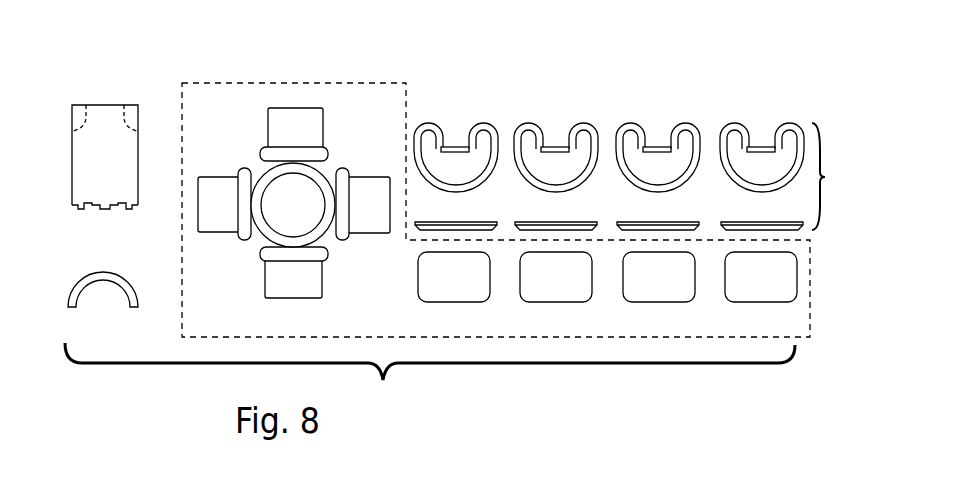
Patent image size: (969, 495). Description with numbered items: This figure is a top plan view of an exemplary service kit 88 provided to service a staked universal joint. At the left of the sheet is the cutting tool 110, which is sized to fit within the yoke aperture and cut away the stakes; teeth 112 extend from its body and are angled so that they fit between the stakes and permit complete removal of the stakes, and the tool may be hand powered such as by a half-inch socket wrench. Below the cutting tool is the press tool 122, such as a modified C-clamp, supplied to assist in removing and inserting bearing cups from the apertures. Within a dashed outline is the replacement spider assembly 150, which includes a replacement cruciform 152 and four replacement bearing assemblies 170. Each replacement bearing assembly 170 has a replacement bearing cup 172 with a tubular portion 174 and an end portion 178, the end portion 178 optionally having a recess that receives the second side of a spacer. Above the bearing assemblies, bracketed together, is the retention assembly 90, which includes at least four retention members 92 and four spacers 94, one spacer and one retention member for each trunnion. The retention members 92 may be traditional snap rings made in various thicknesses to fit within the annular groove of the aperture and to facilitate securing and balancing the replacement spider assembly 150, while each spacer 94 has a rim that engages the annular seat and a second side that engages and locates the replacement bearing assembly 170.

The service kit 88 is at (430, 374).
The retention assembly 90 is at (831, 176).
The retention member 92 is at (489, 129).
The spacer 94 is at (580, 222).
The cutting tool 110 is at (115, 152).
The teeth 112 is at (102, 212).
The press tool 122 is at (107, 274).
The replacement spider assembly 150 is at (403, 70).
The replacement cruciform 152 is at (342, 162).
The replacement bearing assembly 170 is at (578, 341).
The replacement bearing cup 172 is at (755, 294).
The tubular portion 174 is at (562, 295).
The end portion 178 is at (457, 303).